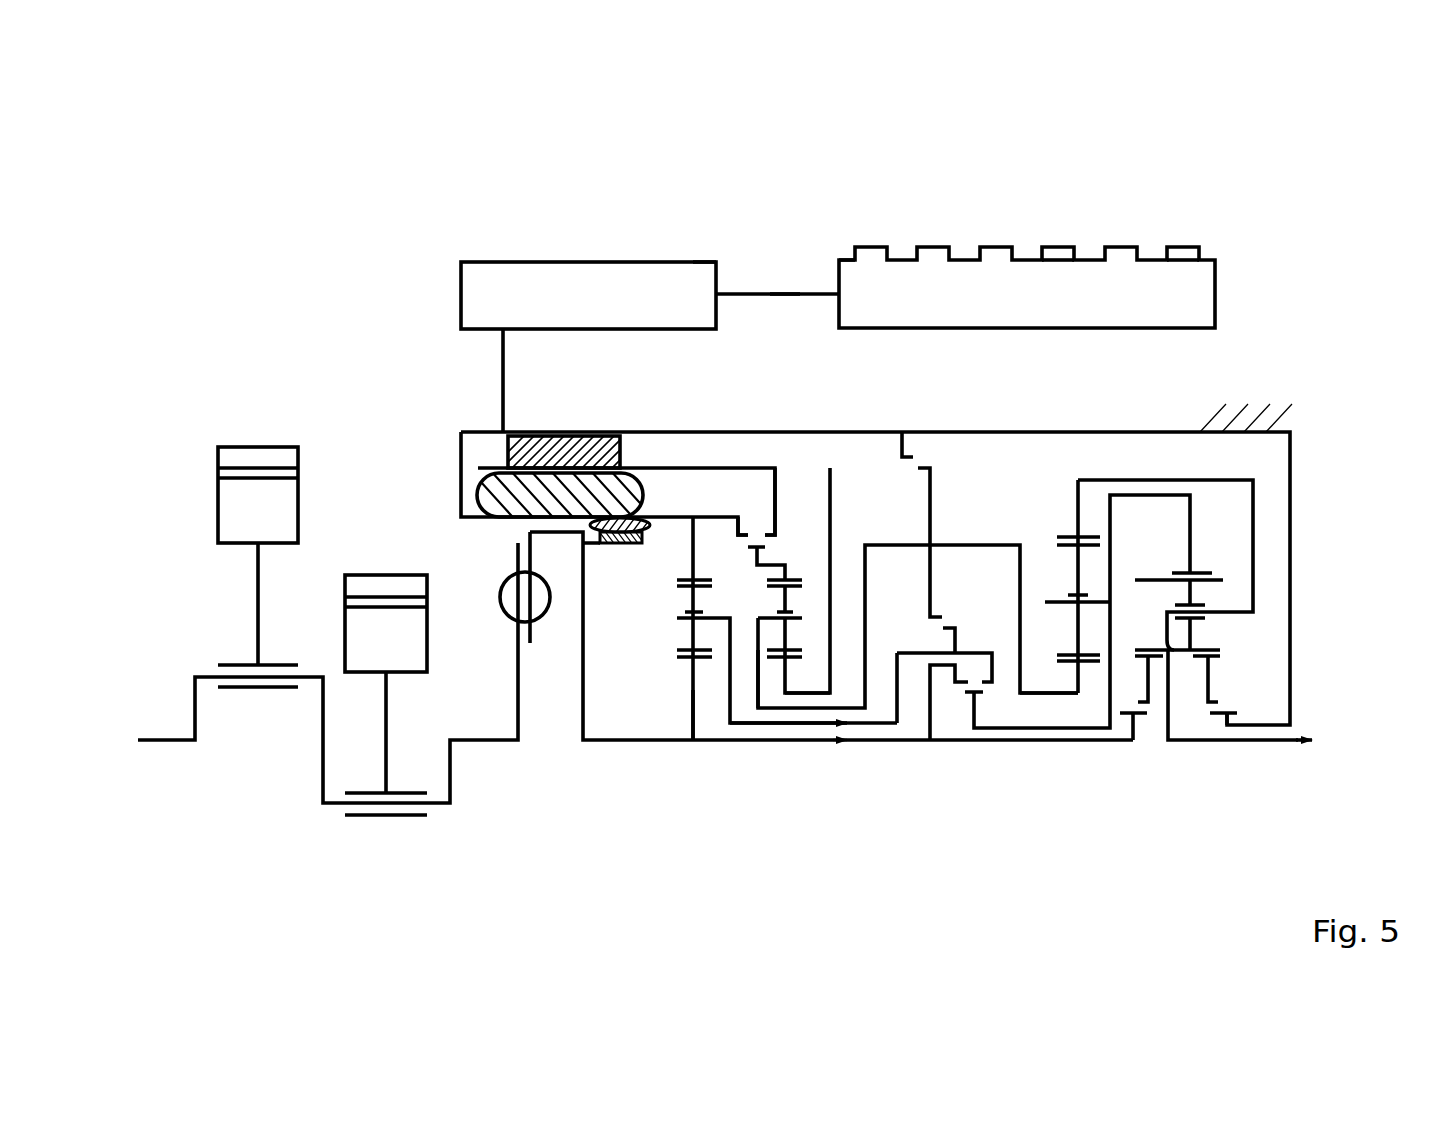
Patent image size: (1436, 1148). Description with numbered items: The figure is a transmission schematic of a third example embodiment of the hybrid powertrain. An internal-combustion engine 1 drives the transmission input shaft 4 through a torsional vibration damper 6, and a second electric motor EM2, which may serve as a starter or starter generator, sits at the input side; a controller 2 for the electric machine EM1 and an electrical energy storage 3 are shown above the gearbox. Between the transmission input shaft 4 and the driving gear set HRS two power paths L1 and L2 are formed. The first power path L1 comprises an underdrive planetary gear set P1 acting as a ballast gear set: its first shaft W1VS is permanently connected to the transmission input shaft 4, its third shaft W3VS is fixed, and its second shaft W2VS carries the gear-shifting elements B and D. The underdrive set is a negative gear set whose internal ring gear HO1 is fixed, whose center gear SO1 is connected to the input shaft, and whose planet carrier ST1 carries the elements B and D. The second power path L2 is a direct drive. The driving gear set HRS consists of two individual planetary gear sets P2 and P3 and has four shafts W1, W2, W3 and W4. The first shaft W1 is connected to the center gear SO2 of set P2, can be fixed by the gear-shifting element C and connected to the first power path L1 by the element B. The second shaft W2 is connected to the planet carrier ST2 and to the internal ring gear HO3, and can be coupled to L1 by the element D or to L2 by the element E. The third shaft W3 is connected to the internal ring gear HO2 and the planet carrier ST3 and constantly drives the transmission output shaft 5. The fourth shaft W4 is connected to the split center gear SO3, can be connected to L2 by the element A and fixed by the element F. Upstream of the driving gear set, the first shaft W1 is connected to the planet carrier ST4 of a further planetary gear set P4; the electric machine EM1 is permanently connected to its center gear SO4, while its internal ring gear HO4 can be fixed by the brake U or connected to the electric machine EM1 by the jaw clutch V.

The internal-combustion engine 1 is at (255, 398).
The controller 2 is at (522, 295).
The electrical energy storage 3 is at (1173, 295).
The transmission input shaft 4 is at (610, 740).
The transmission output shaft 5 is at (1266, 748).
The torsional vibration damper 6 is at (506, 581).
The electric machine EM1 is at (494, 455).
The second electric motor EM2 is at (641, 472).
The third shaft of the underdrive planetary gear set W3VS is at (693, 550).
The gear-shifting element U is at (748, 532).
The gear-shifting element V is at (776, 530).
The underdrive planetary gear set P1 is at (693, 241).
The planetary gear set P4 is at (783, 241).
The internal ring gear of the planetary gear set P4 HO4 is at (800, 575).
The planet carrier of the planetary gear set P4 ST4 is at (797, 607).
The center gear of the planetary gear set P4 SO4 is at (792, 660).
The first gear-shifting element C is at (913, 455).
The first individual planetary gear set P2 is at (1078, 223).
The second individual planetary gear set P3 is at (1189, 223).
The driving gear set HRS is at (1225, 138).
The internal ring gear of the first individual planetary gear set HO2 is at (1090, 537).
The planet carrier of the first individual planetary gear set ST2 is at (1092, 602).
The center gear of the first individual planetary gear set SO2 is at (1088, 663).
The third shaft W3 is at (1256, 492).
The internal ring gear of the second individual planetary gear set HO3 is at (1199, 572).
The planet carrier of the second individual planetary gear set ST3 is at (1211, 611).
The center gear of the second individual planetary gear set SO3 is at (1157, 658).
The fourth shaft W4 is at (1212, 683).
The sixth gear-shifting element F is at (1220, 727).
The internal ring gear of the underdrive planetary gear set HO1 is at (687, 578).
The planet carrier of the underdrive planetary gear set ST1 is at (685, 616).
The center gear of the underdrive planetary gear set SO1 is at (685, 660).
The first shaft of the underdrive planetary gear set W1VS is at (692, 707).
The second shaft of the underdrive planetary gear set W2VS is at (758, 705).
The second gear-shifting element B is at (927, 713).
The fourth gear-shifting element E is at (965, 695).
The third gear-shifting element D is at (988, 684).
The first shaft W1 is at (1055, 693).
The second shaft W2 is at (1080, 695).
The fifth gear-shifting element A is at (1136, 727).
The first power path L1 is at (818, 723).
The second power path L2 is at (967, 756).